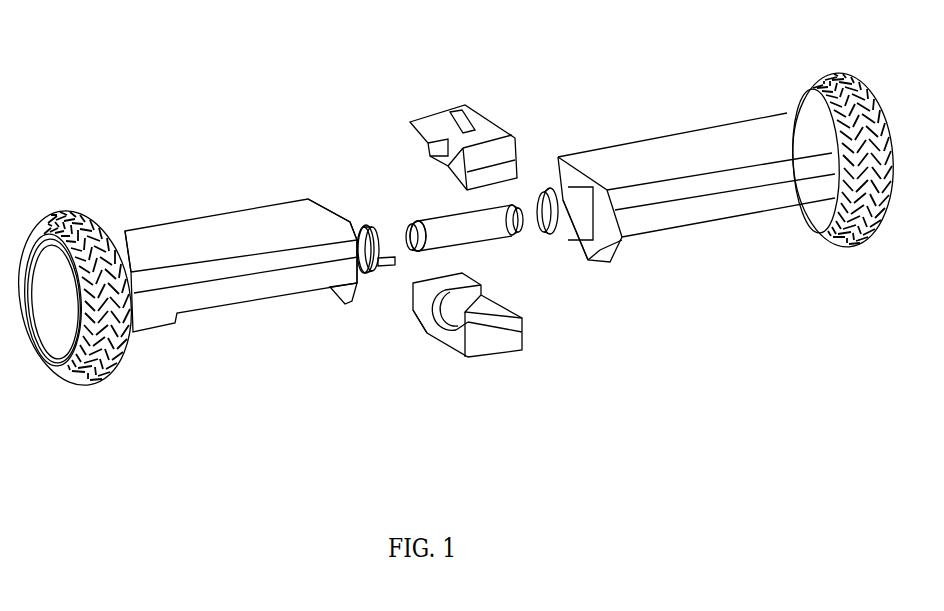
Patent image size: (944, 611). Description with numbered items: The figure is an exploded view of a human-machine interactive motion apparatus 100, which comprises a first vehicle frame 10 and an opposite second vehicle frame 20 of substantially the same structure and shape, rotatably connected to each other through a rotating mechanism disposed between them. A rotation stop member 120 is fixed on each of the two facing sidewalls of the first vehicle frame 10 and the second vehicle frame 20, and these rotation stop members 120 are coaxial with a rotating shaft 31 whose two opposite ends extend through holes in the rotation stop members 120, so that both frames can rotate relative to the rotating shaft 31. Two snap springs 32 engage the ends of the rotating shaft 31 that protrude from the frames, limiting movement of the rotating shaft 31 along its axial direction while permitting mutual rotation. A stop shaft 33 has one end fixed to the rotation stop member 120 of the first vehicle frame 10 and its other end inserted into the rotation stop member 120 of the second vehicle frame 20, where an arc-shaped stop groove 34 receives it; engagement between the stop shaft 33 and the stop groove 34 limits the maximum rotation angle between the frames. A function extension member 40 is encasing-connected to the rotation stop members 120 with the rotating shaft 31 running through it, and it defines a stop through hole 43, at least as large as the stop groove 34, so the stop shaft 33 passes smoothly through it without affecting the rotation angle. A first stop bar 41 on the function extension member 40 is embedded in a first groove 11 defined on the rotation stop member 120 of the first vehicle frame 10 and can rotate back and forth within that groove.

The human-machine interactive motion apparatus 100 is at (430, 31).
The first vehicle frame 10 is at (200, 372).
The second vehicle frame 20 is at (798, 282).
The first groove 11 is at (562, 190).
The rotation stop member 120 is at (550, 190).
The rotating shaft 31 is at (555, 303).
The snap spring 32 is at (422, 223).
The stop shaft 33 is at (388, 303).
The stop groove 34 is at (607, 327).
The function extension member 40 is at (555, 358).
The first stop bar 41 is at (440, 143).
The stop through hole 43 is at (410, 377).